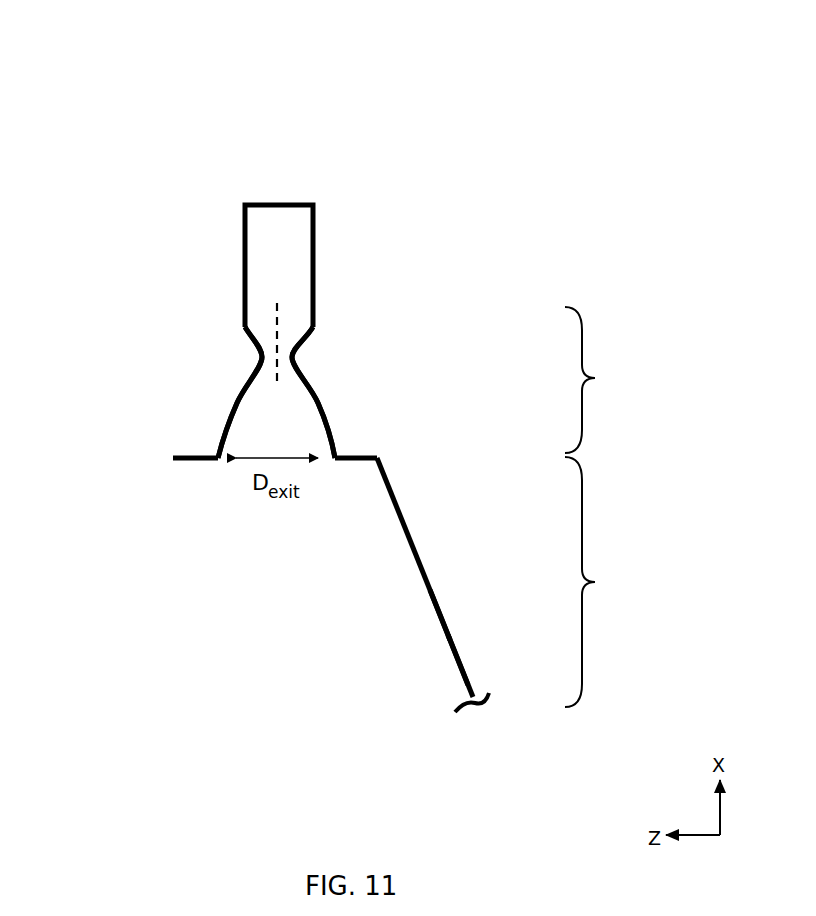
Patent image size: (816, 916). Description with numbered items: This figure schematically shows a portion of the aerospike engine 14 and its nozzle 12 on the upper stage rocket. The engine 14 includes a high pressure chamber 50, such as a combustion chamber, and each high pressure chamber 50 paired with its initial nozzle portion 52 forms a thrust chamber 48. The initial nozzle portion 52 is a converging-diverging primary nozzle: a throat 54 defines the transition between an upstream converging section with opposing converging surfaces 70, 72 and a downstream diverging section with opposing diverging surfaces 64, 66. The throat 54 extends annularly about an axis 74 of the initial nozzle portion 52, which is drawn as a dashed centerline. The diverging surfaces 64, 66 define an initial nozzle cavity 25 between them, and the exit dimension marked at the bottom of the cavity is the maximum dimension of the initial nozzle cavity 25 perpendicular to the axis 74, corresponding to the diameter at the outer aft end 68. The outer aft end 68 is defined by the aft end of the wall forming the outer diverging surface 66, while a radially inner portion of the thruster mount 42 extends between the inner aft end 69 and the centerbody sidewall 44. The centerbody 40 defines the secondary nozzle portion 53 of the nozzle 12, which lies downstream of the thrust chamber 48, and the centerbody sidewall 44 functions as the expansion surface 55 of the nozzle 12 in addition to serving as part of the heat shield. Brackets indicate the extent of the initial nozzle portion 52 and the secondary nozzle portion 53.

The engine 14 is at (146, 80).
The nozzle 12 is at (181, 173).
The thrust chamber 48 is at (370, 191).
The high pressure chamber 50 is at (279, 266).
The axis 74 is at (270, 317).
The converging surface 72 is at (247, 328).
The converging surface 70 is at (311, 328).
The throat 54 is at (307, 360).
The outer diverging surface 66 is at (240, 403).
The diverging surface 64 is at (318, 403).
The initial nozzle cavity 25 is at (276, 407).
The thruster mount 42 is at (205, 456).
The outer aft end 68 is at (220, 462).
The inner aft end 69 is at (333, 462).
The centerbody 40 is at (433, 585).
The centerbody sidewall 44 is at (443, 623).
The expansion surface 55 is at (460, 670).
The initial nozzle portion 52 is at (596, 380).
The secondary nozzle portion 53 is at (596, 582).